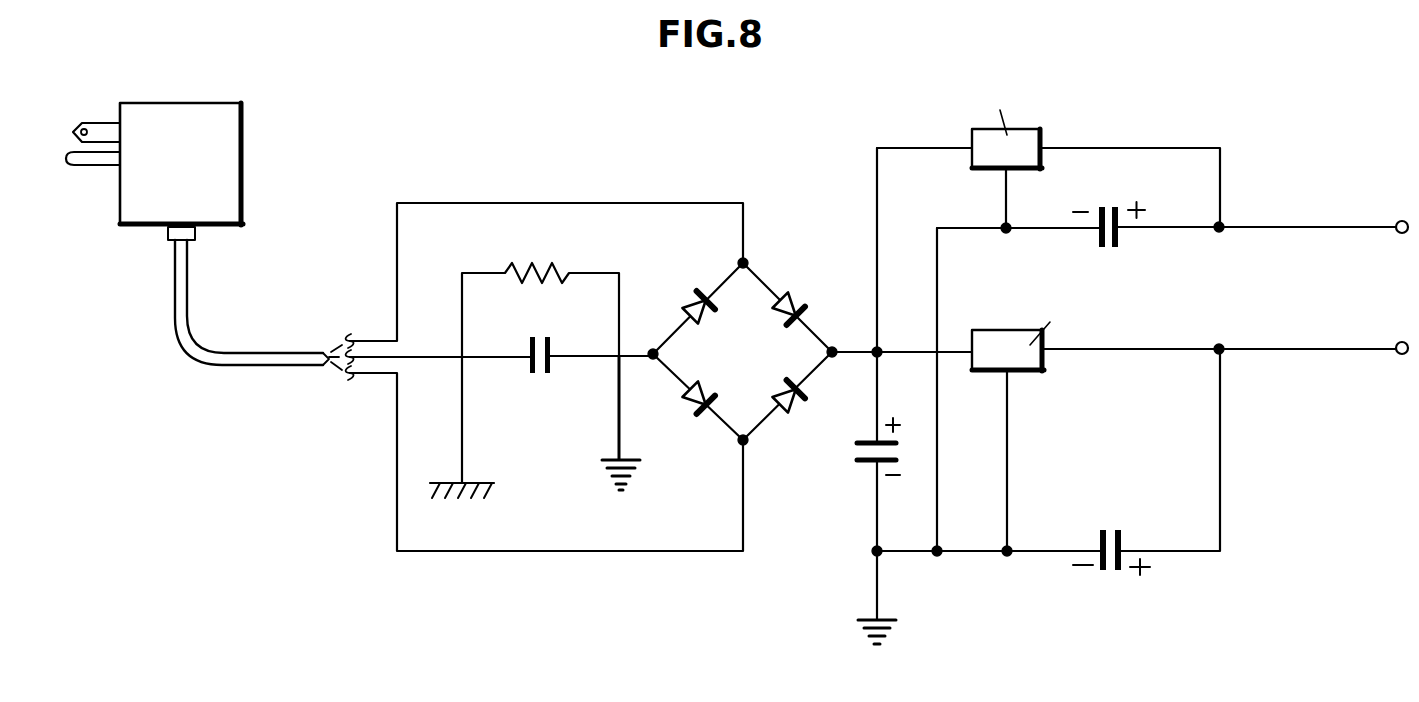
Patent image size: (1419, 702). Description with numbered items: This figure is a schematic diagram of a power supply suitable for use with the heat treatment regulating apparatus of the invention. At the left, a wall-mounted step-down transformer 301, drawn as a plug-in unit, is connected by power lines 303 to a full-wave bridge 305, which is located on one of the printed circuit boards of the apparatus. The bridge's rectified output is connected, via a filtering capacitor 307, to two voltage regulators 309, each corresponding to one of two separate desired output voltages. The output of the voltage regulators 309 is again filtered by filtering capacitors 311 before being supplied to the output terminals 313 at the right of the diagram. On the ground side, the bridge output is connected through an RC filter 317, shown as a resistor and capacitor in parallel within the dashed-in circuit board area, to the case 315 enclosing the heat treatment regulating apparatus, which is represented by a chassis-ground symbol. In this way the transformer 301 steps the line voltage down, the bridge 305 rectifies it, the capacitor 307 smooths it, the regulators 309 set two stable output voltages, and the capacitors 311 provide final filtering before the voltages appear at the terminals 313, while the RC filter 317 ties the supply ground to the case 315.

The wall-mounted step-down transformer 301 is at (225, 157).
The power lines 303 is at (560, 202).
The full-wave bridge 305 is at (778, 280).
The filtering capacitor 307 is at (858, 460).
The voltage regulators 309 is at (972, 137).
The filtering capacitors 311 is at (1118, 246).
The output terminals 313 is at (1402, 234).
The case 315 is at (494, 483).
The RC filter 317 is at (548, 278).